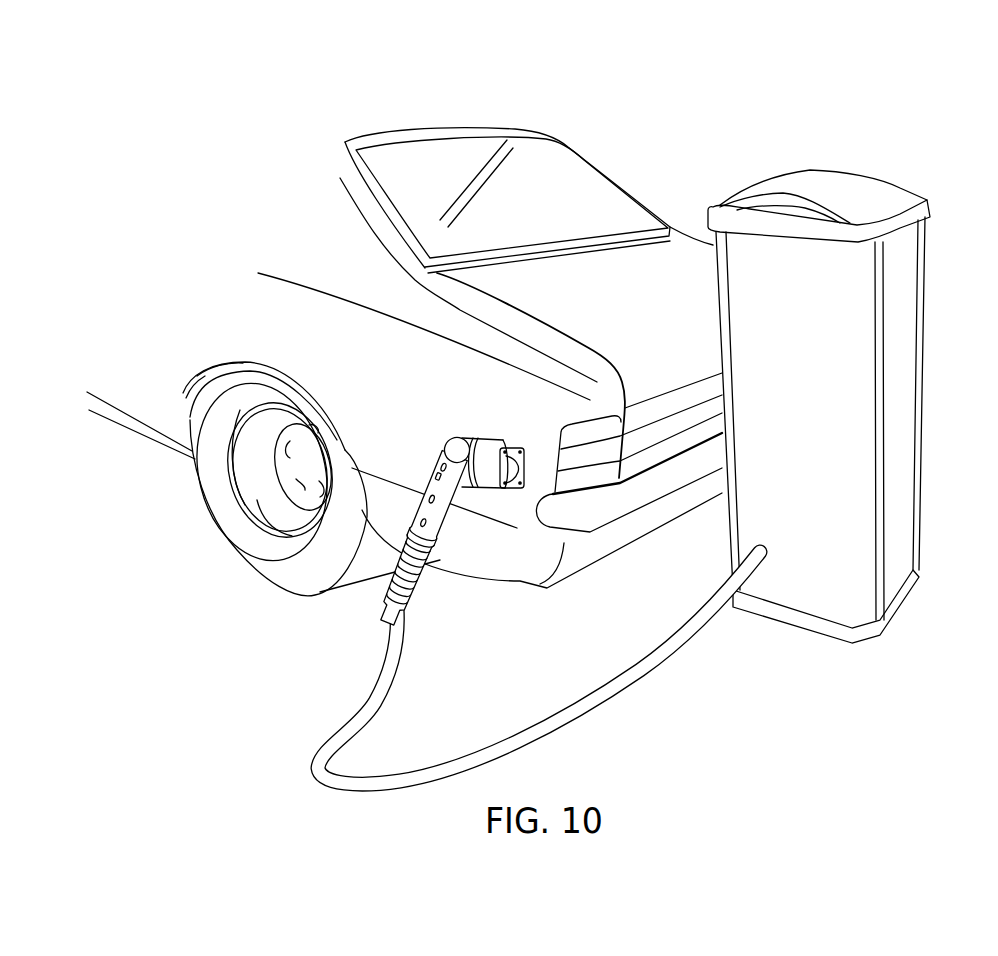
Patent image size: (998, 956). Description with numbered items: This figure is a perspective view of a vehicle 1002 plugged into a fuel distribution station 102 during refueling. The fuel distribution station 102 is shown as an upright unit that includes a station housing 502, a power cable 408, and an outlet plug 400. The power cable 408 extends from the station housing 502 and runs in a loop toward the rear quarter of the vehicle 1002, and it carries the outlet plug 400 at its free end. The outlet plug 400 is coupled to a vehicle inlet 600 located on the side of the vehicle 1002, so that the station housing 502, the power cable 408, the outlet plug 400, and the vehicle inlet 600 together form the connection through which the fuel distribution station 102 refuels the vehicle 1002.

The fuel distribution station 102 is at (851, 375).
The station housing 502 is at (957, 428).
The outlet plug 400 is at (450, 442).
The vehicle inlet 600 is at (523, 447).
The power cable 408 is at (620, 683).
The vehicle 1002 is at (150, 442).